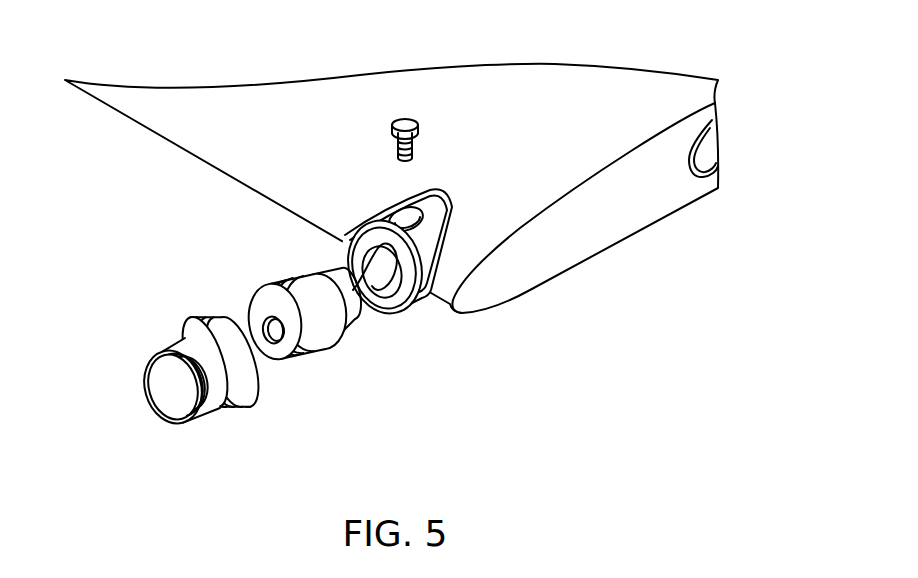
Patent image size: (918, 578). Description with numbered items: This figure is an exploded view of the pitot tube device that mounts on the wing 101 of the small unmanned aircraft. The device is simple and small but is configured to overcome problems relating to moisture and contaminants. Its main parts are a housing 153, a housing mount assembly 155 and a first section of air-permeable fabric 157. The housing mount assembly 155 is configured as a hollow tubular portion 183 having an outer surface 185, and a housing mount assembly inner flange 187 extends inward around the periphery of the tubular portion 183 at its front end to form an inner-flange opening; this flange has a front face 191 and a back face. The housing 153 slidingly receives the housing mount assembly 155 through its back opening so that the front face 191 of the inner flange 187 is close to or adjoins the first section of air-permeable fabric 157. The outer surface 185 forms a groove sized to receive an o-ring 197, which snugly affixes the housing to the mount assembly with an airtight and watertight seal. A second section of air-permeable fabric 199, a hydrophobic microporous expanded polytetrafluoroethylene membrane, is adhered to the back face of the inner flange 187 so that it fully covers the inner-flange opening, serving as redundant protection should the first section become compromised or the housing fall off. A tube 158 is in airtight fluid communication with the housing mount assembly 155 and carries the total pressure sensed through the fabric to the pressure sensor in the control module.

The wing 101 is at (549, 90).
The housing 153 is at (177, 372).
The housing mount assembly 155 is at (348, 322).
The first section of air-permeable fabric 157 is at (190, 385).
The tube 158 is at (385, 298).
The hollow tubular portion 183 is at (317, 350).
The outer surface 185 is at (297, 297).
The housing mount assembly inner flange 187 is at (283, 358).
The front face 191 is at (263, 300).
The o-ring 197 is at (268, 286).
The second section of air-permeable fabric 199 is at (215, 315).